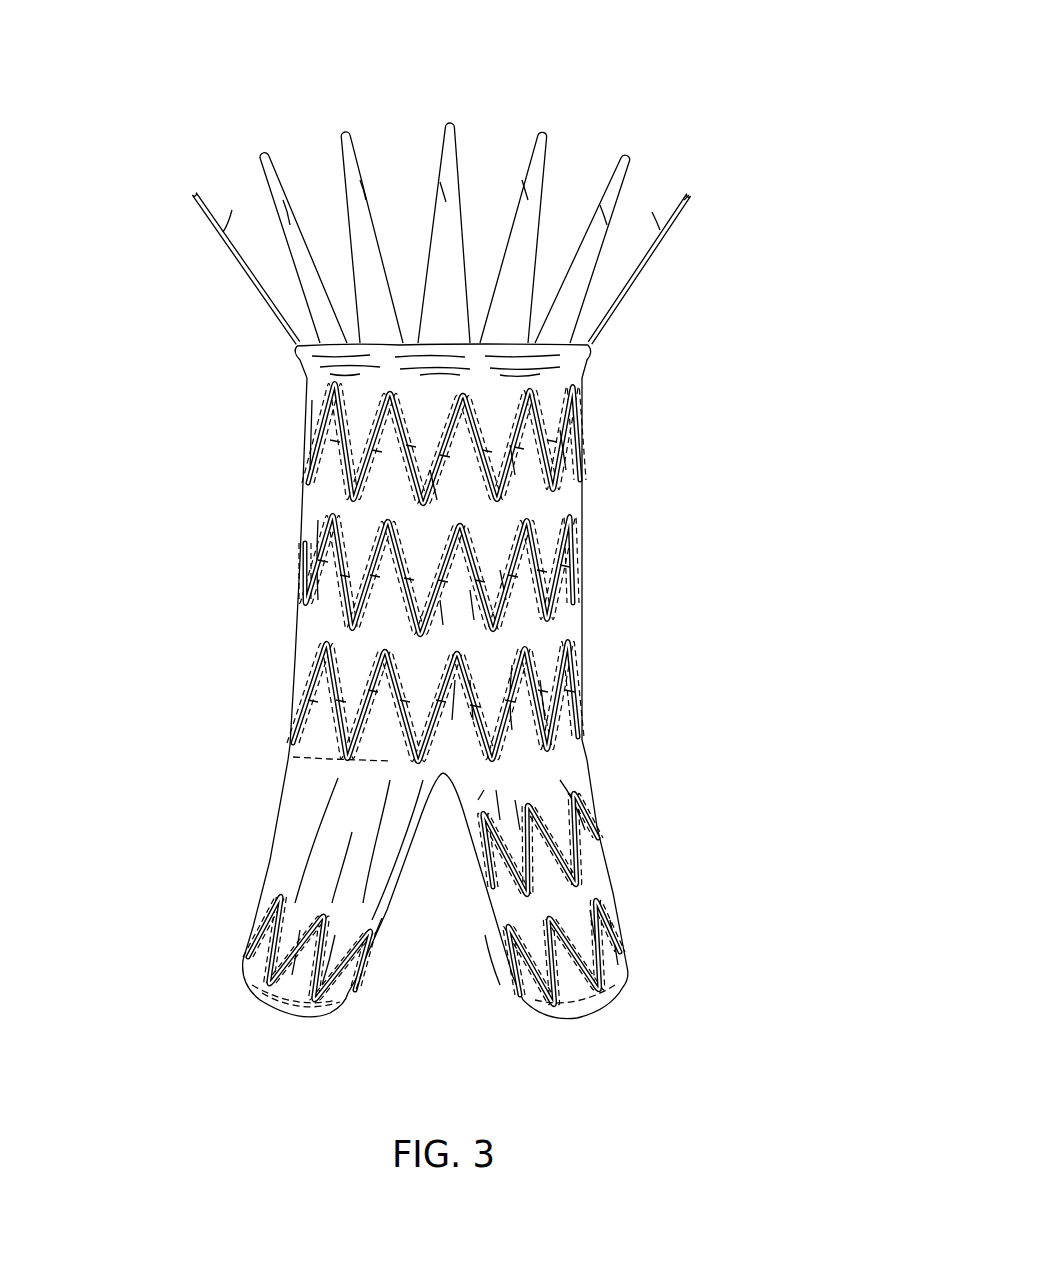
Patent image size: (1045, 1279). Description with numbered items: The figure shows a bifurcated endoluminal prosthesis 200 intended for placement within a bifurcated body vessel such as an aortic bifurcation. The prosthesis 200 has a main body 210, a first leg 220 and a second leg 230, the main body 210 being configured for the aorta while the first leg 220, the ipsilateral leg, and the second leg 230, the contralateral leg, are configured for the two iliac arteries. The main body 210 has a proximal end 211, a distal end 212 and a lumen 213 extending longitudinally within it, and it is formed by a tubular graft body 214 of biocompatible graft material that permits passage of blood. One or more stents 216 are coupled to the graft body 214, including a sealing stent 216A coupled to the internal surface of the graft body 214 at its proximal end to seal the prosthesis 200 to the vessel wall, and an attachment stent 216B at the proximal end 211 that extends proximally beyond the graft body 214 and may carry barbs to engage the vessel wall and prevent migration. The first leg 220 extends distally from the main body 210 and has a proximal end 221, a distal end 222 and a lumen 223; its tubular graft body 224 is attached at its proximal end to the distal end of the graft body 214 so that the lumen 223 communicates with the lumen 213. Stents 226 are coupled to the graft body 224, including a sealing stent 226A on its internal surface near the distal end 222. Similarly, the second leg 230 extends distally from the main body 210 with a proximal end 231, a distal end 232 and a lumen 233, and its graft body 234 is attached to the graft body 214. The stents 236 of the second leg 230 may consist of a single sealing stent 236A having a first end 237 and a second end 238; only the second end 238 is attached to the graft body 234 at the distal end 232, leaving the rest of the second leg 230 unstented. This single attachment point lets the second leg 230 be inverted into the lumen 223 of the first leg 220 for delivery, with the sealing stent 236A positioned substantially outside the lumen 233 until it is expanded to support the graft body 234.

The prosthesis 200 is at (459, 553).
The main body 210 is at (471, 558).
The proximal end 211 is at (690, 193).
The distal end 212 is at (582, 740).
The lumen 213 is at (490, 208).
The graft body 214 is at (530, 455).
The stents 216 is at (317, 562).
The sealing stent 216A is at (307, 442).
The attachment stent 216B is at (688, 244).
The first leg 220 is at (597, 930).
The proximal end 221 is at (583, 747).
The distal end 222 is at (623, 988).
The lumen 223 is at (602, 1028).
The graft body 224 is at (588, 860).
The stents 226 is at (583, 837).
The sealing stent 226A is at (622, 928).
The second leg 230 is at (295, 931).
The proximal end 231 is at (292, 758).
The distal end 232 is at (248, 987).
The lumen 233 is at (283, 1027).
The graft body 234 is at (287, 860).
The stents 236 is at (260, 922).
The sealing stent 236A is at (362, 972).
The first end 237 is at (382, 918).
The second end 238 is at (345, 1007).